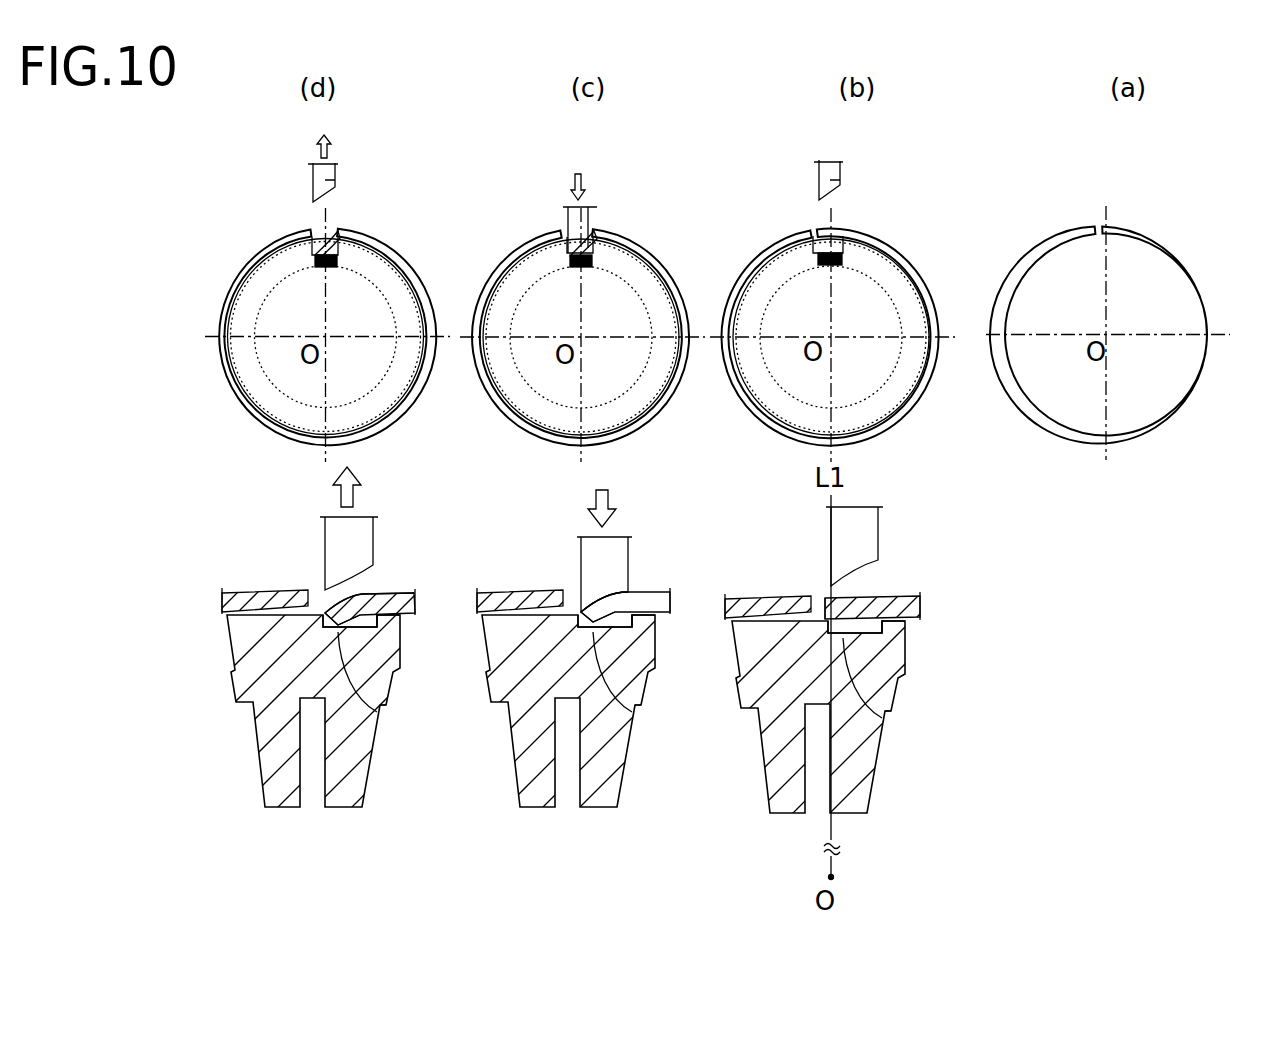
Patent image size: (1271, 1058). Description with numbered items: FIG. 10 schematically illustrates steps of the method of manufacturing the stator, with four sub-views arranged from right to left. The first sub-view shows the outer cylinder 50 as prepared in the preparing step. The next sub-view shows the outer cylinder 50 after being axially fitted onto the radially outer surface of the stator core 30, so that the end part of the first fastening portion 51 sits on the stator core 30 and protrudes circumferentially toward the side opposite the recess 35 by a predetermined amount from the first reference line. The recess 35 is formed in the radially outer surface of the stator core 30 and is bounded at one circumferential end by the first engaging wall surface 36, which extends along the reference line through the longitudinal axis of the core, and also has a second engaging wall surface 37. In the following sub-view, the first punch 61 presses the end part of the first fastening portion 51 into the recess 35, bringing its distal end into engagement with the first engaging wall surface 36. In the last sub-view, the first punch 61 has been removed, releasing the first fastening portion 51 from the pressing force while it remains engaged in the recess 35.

The stator core 30 is at (282, 262).
The recess 35 is at (322, 243).
The first engaging wall surface 36 is at (379, 710).
The second engaging wall surface 37 is at (368, 628).
The outer cylinder 50 is at (393, 250).
The first fastening portion 51 is at (315, 242).
The first punch 61 is at (337, 181).